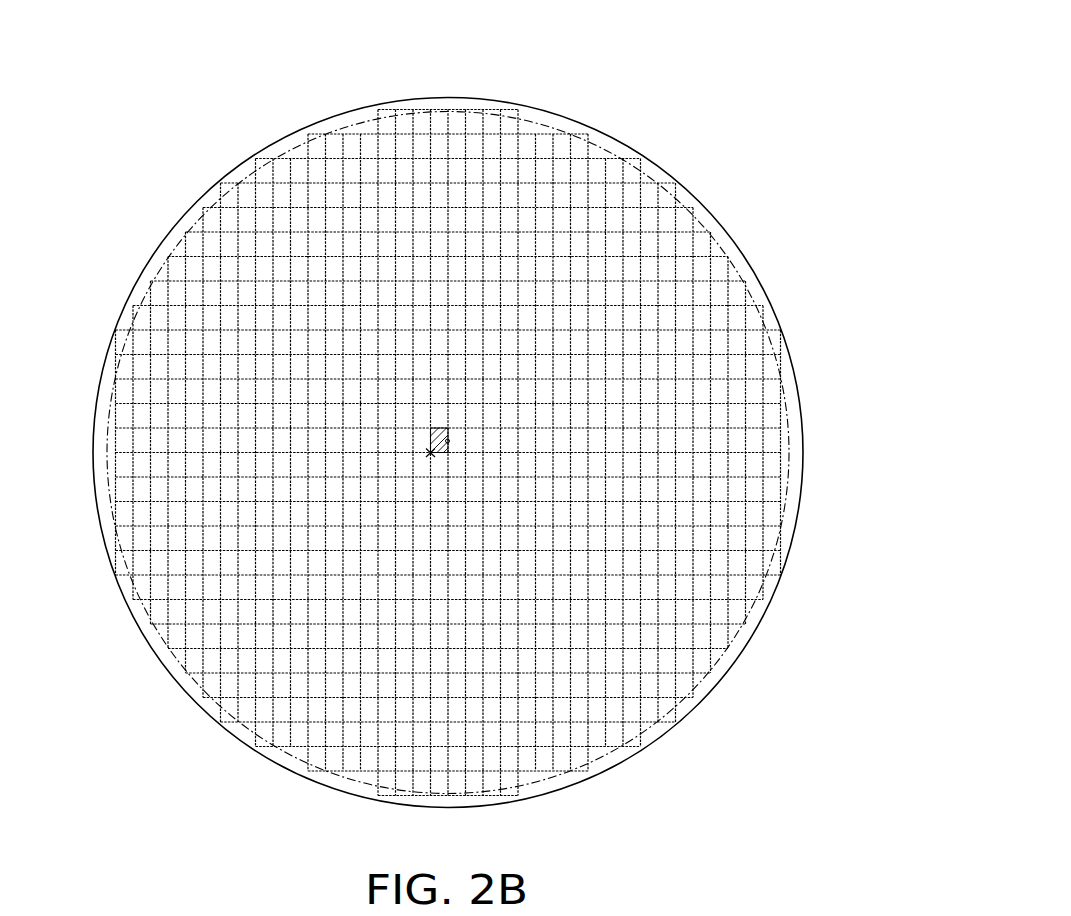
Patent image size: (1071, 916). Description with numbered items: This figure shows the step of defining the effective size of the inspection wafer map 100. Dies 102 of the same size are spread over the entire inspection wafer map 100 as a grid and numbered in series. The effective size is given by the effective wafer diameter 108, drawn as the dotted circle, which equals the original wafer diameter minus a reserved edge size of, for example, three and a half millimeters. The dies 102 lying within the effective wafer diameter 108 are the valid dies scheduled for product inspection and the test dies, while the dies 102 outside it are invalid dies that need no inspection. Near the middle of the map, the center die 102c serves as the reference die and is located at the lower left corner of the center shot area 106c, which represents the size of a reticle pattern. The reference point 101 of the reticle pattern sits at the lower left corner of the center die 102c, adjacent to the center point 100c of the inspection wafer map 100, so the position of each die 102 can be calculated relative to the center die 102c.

The inspection wafer map 100 is at (702, 80).
The center point of the inspection wafer map 100c is at (449, 440).
The reference point of the reticle pattern 101 is at (431, 455).
The dies 102 is at (633, 157).
The center die 102c is at (429, 442).
The center shot area 106c is at (455, 382).
The effective wafer diameter 108 is at (678, 201).